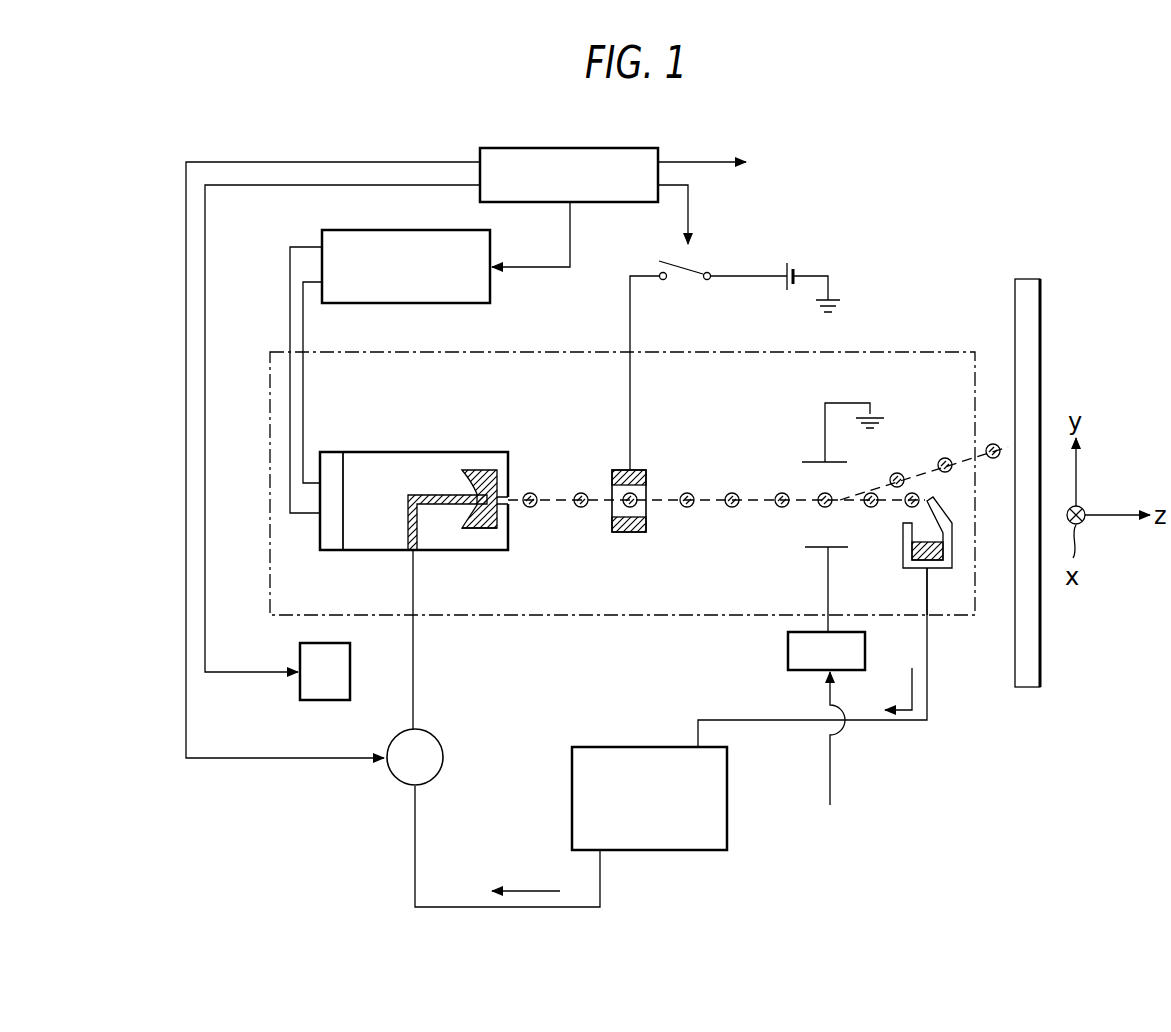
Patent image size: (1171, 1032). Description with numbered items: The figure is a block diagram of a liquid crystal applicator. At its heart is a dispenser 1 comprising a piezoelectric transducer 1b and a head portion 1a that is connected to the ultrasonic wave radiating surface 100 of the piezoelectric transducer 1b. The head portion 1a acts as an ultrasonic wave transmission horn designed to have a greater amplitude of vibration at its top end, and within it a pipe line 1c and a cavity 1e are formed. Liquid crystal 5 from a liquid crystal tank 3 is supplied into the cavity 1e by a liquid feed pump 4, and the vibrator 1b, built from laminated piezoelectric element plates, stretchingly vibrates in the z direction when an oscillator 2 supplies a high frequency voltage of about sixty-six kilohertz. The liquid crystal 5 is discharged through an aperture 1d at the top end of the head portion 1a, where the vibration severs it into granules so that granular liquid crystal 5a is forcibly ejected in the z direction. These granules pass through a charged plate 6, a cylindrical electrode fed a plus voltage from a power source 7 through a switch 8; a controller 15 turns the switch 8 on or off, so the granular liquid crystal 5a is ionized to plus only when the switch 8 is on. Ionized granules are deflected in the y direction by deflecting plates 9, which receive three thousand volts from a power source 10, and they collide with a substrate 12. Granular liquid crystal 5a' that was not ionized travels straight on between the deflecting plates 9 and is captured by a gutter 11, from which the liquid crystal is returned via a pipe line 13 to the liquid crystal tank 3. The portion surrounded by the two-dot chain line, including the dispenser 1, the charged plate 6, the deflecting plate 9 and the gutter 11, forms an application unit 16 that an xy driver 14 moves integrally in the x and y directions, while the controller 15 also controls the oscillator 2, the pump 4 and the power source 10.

The dispenser 1 is at (444, 487).
The head portion 1a is at (385, 543).
The piezoelectric transducer 1b is at (333, 543).
The pipe line 1c is at (443, 505).
The aperture 1d is at (510, 470).
The cavity 1e is at (495, 520).
The ultrasonic wave radiating surface 100 is at (345, 468).
The oscillator 2 is at (490, 288).
The liquid crystal tank 3 is at (727, 800).
The liquid feed pump 4 is at (445, 760).
The liquid crystal 5 is at (483, 468).
The granular liquid crystal 5a is at (758, 488).
The granular liquid crystal not ionized 5a' is at (875, 534).
The charged plate 6 is at (630, 534).
The power source 7 is at (790, 260).
The switch 8 is at (684, 288).
The deflecting plates 9 is at (812, 458).
The power source 10 is at (788, 650).
The gutter 11 is at (933, 566).
The substrate 12 is at (1027, 655).
The pipe line 13 is at (927, 722).
The xy driver 14 is at (298, 688).
The controller 15 is at (592, 205).
The application unit 16 is at (597, 618).